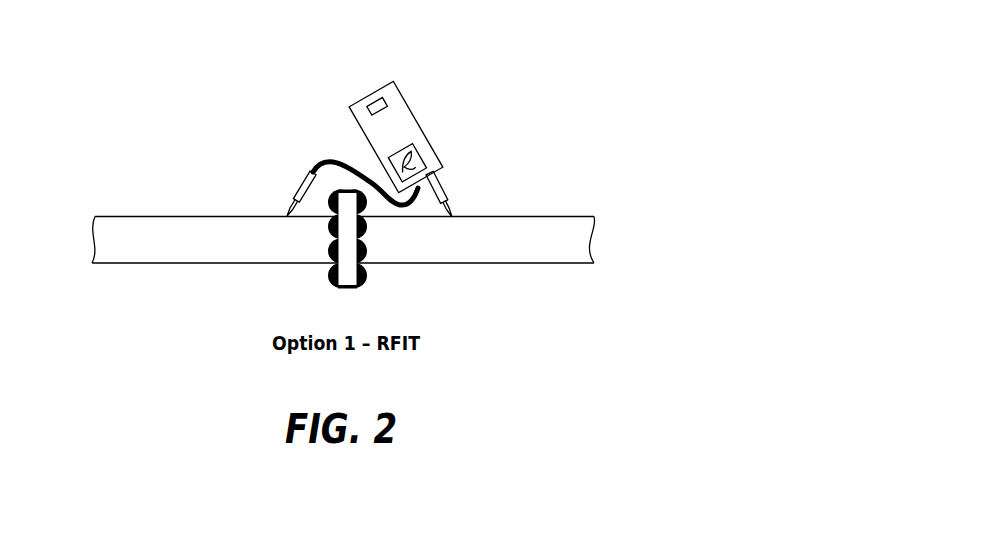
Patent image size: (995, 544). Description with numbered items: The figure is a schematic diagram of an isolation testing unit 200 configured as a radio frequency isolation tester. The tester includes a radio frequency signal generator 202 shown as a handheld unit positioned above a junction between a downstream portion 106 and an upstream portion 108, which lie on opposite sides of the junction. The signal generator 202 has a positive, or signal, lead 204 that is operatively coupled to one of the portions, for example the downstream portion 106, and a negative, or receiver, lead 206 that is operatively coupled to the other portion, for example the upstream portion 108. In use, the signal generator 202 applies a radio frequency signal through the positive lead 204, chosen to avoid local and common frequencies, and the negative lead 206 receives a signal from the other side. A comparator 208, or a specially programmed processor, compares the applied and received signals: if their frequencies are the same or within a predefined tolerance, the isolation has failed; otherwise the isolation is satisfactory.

The isolation testing unit 200 is at (218, 86).
The radio frequency signal generator 202 is at (411, 107).
The positive lead 204 is at (442, 184).
The negative lead 206 is at (305, 178).
The comparator 208 is at (370, 103).
The downstream portion 106 is at (588, 246).
The upstream portion 108 is at (110, 237).